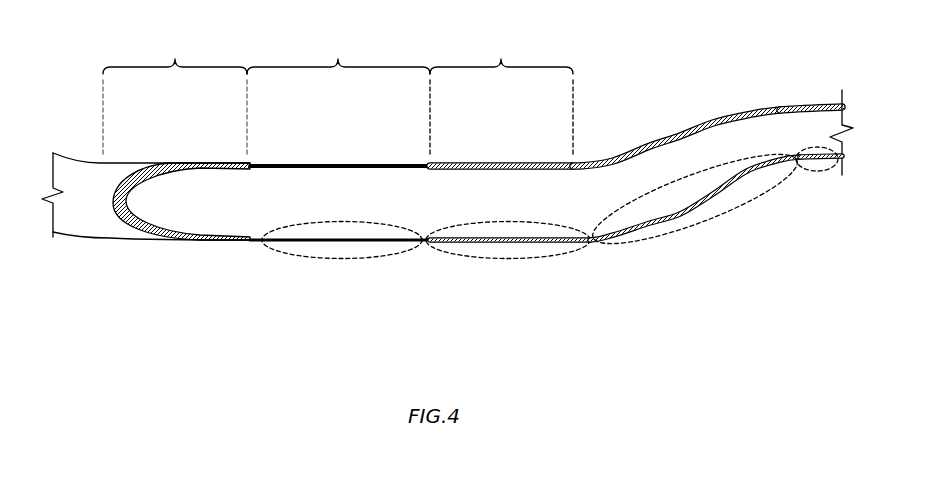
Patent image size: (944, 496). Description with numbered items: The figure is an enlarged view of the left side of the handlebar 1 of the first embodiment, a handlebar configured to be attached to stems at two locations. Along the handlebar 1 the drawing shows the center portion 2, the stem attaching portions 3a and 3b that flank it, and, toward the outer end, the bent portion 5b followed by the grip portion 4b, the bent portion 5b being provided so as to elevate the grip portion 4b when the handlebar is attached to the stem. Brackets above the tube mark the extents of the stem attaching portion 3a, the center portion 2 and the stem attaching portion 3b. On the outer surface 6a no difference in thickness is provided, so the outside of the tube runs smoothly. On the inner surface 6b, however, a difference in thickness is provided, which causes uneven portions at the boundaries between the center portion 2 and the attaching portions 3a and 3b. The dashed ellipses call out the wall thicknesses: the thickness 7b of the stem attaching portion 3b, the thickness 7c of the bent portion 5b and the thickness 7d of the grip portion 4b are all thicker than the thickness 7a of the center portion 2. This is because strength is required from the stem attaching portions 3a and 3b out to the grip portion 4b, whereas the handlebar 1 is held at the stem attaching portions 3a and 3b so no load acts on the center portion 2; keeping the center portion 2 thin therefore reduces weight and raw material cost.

The handlebar 1 is at (781, 47).
The center portion 2 is at (338, 98).
The stem attaching portion 3a is at (175, 93).
The stem attaching portion 3b is at (501, 98).
The grip portion 4b is at (823, 118).
The bent portion 5b is at (684, 160).
The outer surface 6a is at (80, 211).
The inner surface 6b is at (188, 214).
The thickness of the center portion 7a is at (343, 259).
The thickness of the stem attaching portion 7b is at (512, 258).
The thickness of the bent portion 7c is at (703, 225).
The thickness of the grip portion 7d is at (817, 172).